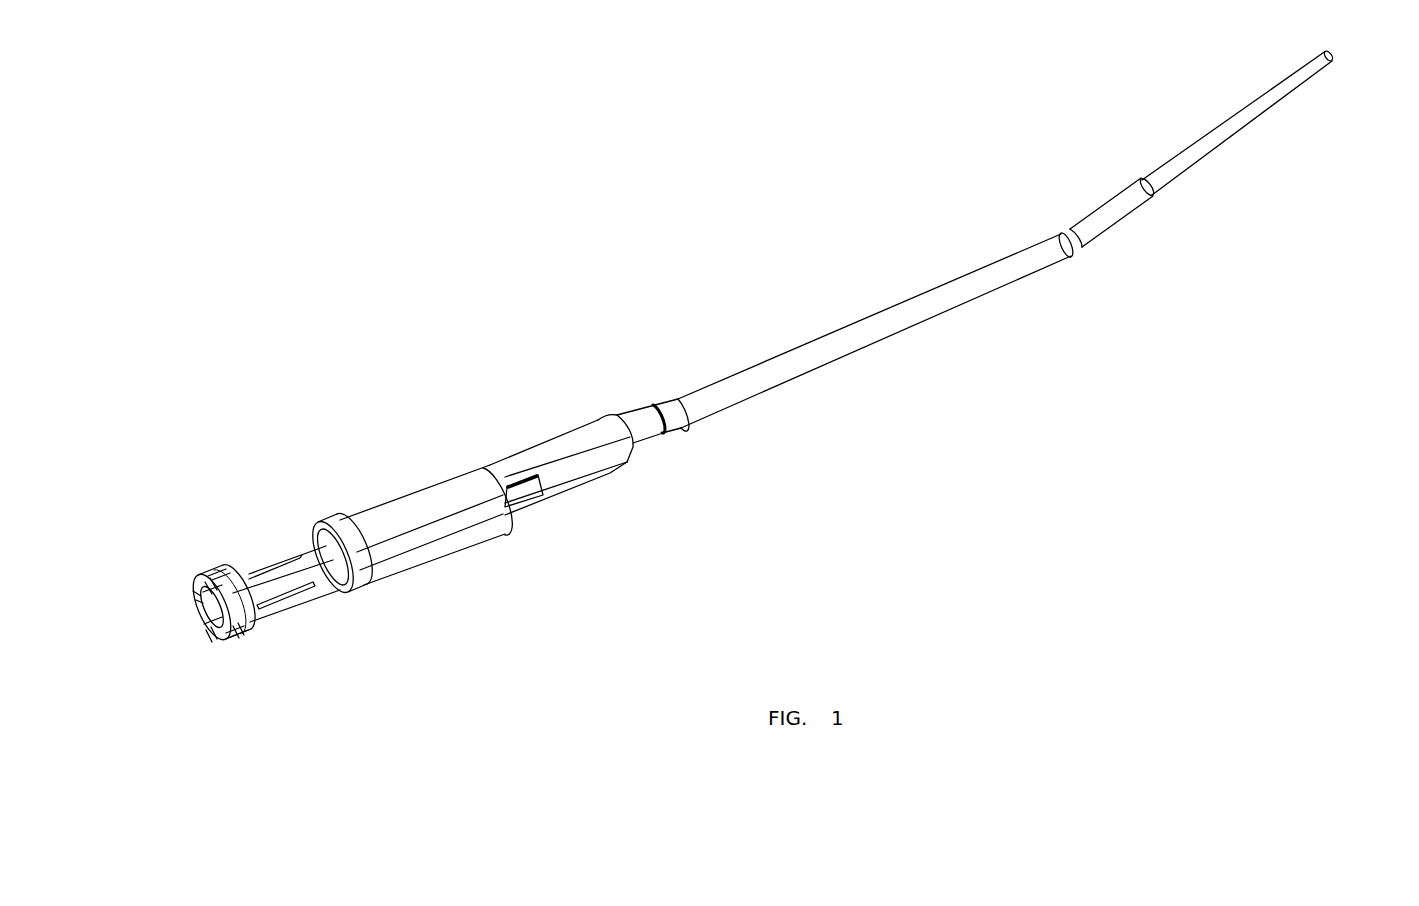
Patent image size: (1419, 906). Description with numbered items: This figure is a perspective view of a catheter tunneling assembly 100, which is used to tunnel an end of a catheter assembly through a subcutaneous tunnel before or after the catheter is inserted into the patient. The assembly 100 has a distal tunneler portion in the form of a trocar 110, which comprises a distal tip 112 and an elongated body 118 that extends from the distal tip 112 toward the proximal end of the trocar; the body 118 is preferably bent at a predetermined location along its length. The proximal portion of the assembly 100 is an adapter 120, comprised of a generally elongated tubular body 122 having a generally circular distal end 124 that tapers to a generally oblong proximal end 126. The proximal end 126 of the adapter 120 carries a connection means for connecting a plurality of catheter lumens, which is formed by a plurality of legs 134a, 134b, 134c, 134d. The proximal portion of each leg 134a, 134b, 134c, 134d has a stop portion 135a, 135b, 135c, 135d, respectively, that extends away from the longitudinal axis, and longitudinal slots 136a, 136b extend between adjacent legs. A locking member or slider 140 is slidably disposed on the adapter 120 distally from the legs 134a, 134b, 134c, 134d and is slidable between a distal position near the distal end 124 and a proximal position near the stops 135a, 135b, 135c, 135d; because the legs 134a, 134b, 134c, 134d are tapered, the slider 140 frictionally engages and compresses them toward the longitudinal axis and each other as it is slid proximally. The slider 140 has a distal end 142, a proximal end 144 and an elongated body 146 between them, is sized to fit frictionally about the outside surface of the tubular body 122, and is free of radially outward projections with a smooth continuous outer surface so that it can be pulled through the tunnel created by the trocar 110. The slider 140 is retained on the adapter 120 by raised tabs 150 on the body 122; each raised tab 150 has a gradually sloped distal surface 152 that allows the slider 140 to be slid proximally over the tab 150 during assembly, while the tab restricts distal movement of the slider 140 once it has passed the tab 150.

The catheter tunneling assembly 100 is at (803, 258).
The trocar 110 is at (1031, 245).
The distal tip 112 is at (1339, 65).
The elongated body 118 is at (1054, 266).
The adapter 120 is at (517, 450).
The elongated tubular body 122 is at (593, 482).
The distal end 124 is at (654, 405).
The proximal end 126 is at (227, 646).
The leg 134a is at (288, 563).
The leg 134b is at (289, 608).
The leg 134c is at (208, 634).
The leg 134d is at (178, 538).
The stop portion 135a is at (239, 571).
The stop portion 135b is at (240, 647).
The stop portion 135c is at (211, 645).
The stop portion 135d is at (200, 587).
The longitudinal slot 136a is at (300, 561).
The longitudinal slot 136b is at (309, 597).
The slider 140 is at (391, 500).
The distal end 142 is at (503, 531).
The proximal end 144 is at (320, 521).
The elongated body 146 is at (435, 527).
The raised tab 150 is at (513, 493).
The gradually sloped distal surface 152 is at (521, 480).